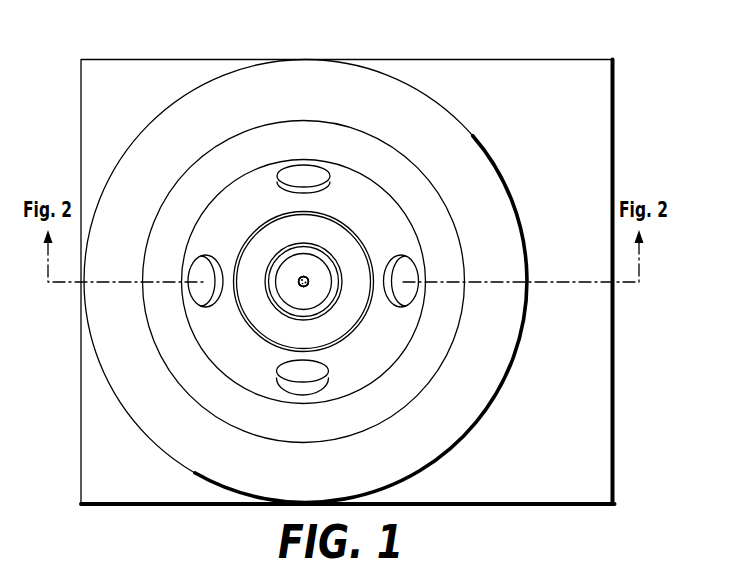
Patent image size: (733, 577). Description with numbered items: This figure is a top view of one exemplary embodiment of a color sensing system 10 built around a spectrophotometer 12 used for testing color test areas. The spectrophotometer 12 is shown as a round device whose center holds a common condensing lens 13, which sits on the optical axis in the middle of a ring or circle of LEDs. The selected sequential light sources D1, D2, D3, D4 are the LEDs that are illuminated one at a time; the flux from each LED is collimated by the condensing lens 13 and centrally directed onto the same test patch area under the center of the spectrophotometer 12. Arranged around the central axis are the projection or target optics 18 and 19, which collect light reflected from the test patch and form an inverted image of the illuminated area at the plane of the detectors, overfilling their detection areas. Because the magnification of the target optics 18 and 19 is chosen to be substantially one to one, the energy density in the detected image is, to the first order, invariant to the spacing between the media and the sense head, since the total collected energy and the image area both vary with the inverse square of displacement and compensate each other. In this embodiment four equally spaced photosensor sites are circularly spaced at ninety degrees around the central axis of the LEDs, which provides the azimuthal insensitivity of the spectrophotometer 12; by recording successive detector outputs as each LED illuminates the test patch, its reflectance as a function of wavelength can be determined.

The color sensing system 10 is at (536, 40).
The spectrophotometer 12 is at (640, 140).
The condensing lens 13 is at (322, 278).
The projection optics 18 is at (398, 272).
The projection optics 19 is at (211, 274).
The light source D1 is at (301, 279).
The light source D2 is at (304, 282).
The light source D3 is at (304, 282).
The light source D4 is at (304, 282).